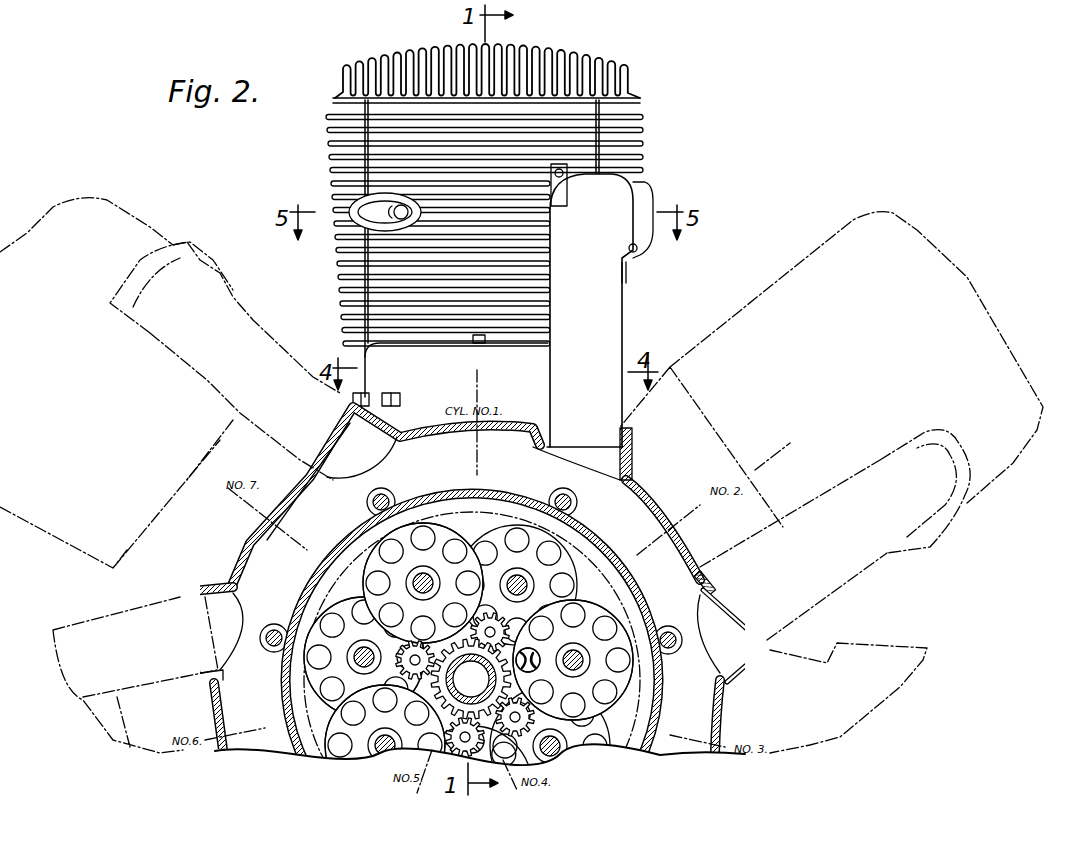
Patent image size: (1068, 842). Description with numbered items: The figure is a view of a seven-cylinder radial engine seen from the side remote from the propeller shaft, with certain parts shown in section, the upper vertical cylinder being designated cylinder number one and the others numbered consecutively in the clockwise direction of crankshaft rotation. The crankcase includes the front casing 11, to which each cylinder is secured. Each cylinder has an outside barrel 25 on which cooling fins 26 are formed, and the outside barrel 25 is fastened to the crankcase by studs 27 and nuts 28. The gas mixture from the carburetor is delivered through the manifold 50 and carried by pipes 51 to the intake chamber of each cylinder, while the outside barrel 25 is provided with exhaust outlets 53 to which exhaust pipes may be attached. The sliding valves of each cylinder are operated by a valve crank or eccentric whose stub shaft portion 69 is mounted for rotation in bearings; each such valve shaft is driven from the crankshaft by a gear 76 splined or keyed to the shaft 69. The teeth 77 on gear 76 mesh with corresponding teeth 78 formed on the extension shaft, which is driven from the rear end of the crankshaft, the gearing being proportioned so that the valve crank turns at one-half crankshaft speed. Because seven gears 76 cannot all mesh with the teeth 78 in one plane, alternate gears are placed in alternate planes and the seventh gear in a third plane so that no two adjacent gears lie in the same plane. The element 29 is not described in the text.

The front casing 11 is at (471, 679).
The outside barrel 25 is at (330, 254).
The cooling fins 26 is at (335, 149).
The studs 27 is at (368, 394).
The nuts 28 is at (398, 395).
The gear hole 29 is at (522, 672).
The manifold 50 is at (257, 560).
The pipes 51 is at (623, 321).
The exhaust outlets 53 is at (358, 201).
The stub shaft portion 69 is at (468, 682).
The gear 76 is at (372, 507).
The teeth 77 is at (363, 650).
The teeth 78 is at (465, 684).